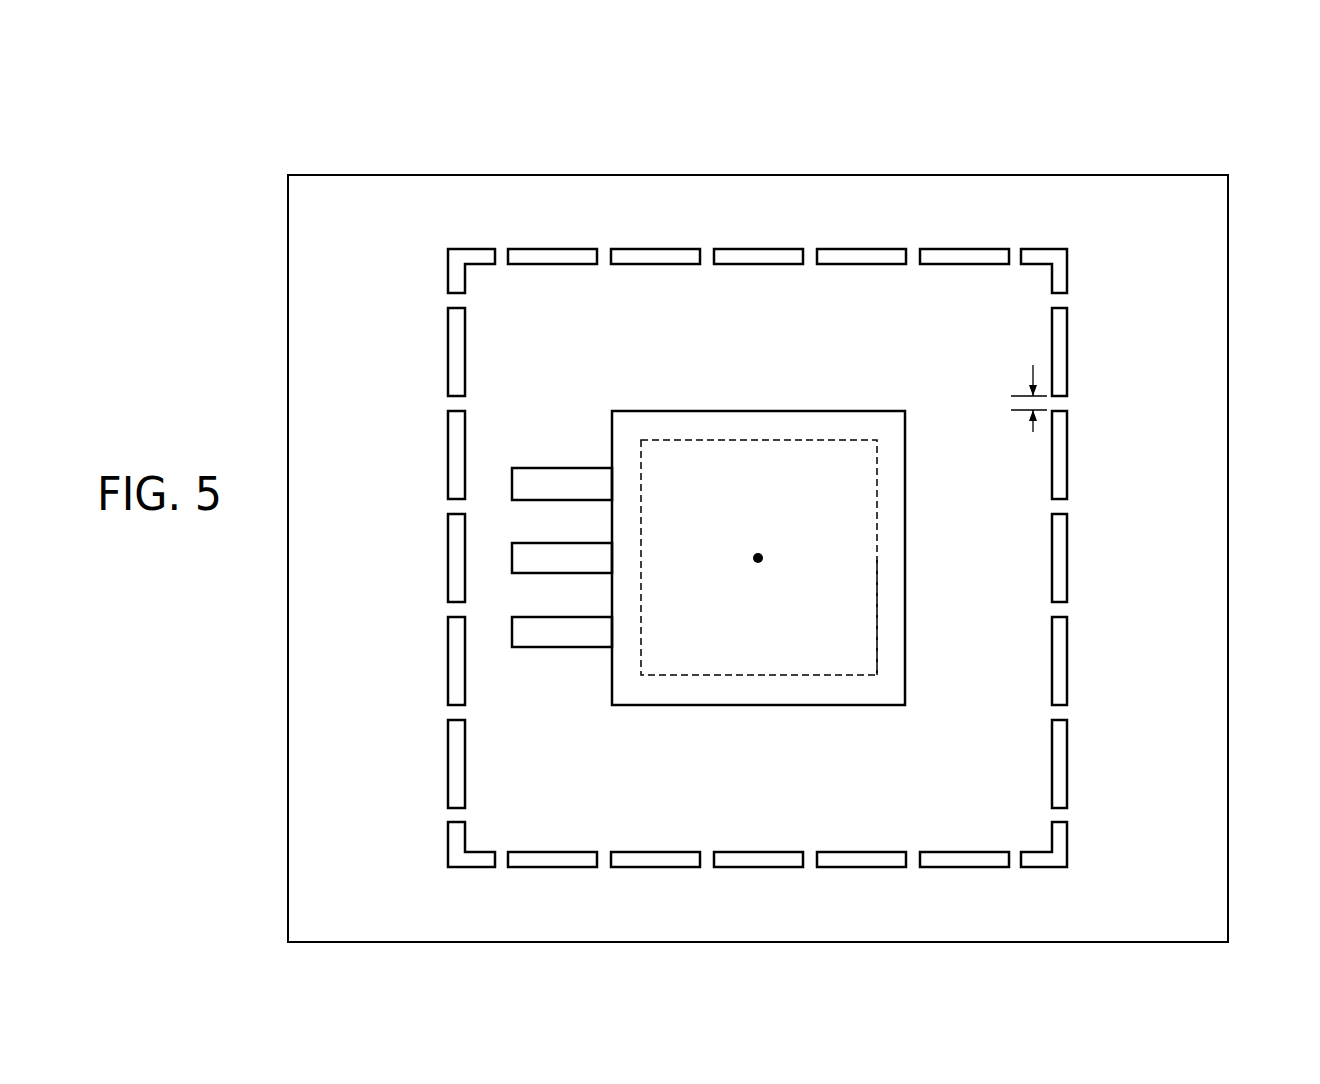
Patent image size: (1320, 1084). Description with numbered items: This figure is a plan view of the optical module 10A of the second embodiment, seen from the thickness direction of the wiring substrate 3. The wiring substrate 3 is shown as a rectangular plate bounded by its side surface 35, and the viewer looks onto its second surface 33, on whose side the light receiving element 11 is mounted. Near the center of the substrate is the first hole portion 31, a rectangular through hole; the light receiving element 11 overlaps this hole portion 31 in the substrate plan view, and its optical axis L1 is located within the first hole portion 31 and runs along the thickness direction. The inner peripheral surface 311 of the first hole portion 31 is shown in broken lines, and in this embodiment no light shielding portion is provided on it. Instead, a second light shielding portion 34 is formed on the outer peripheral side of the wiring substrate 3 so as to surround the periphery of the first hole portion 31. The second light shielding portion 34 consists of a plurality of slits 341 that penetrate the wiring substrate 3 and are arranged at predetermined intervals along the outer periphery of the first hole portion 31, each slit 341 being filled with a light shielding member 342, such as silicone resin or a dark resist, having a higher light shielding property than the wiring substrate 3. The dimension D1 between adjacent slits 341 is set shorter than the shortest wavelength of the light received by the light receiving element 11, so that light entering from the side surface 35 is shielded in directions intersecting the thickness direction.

The optical module 10A is at (758, 148).
The wiring substrate 3 is at (1035, 207).
The second surface 33 is at (1121, 195).
The side surface 35 is at (1229, 481).
The second light shielding portion 34 is at (1106, 274).
The slit 341 is at (1064, 322).
The light shielding member 342 is at (1061, 377).
The dimension D1 is at (1033, 403).
The light receiving element 11 is at (770, 411).
The first hole portion 31 is at (830, 492).
The inner peripheral surface 311 is at (877, 625).
The optical axis L1 is at (758, 576).